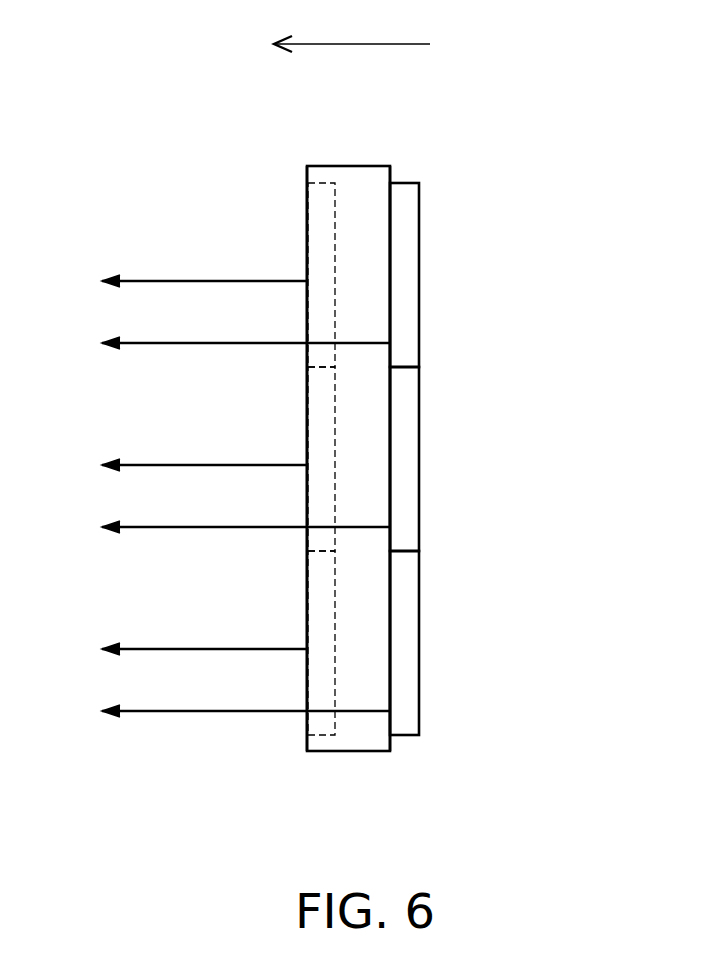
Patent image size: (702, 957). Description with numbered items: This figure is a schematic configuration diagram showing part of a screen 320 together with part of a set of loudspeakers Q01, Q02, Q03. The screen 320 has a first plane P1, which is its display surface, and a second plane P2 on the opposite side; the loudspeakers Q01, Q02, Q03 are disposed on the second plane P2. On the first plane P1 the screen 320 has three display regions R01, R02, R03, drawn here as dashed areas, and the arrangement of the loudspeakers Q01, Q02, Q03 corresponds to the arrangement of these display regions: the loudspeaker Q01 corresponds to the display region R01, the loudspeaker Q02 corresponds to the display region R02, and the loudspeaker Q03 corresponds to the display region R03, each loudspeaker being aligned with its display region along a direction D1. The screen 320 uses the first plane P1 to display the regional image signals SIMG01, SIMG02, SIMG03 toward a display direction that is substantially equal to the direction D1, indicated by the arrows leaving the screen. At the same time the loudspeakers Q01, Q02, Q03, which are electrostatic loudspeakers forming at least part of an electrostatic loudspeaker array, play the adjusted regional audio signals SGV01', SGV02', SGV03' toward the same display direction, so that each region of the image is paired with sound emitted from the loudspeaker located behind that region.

The screen 320 is at (357, 192).
The first plane P1 is at (307, 175).
The second plane P2 is at (390, 175).
The loudspeaker Q01 is at (404, 230).
The loudspeaker Q02 is at (404, 422).
The loudspeaker Q03 is at (404, 602).
The display region R01 is at (322, 226).
The display region R02 is at (322, 423).
The display region R03 is at (322, 608).
The direction D1 is at (352, 29).
The regional image signal SIMG01 is at (204, 266).
The regional image signal SIMG02 is at (204, 451).
The regional image signal SIMG03 is at (204, 635).
The adjusted regional audio signal SGV01' is at (204, 328).
The adjusted regional audio signal SGV02' is at (204, 512).
The adjusted regional audio signal SGV03' is at (204, 696).